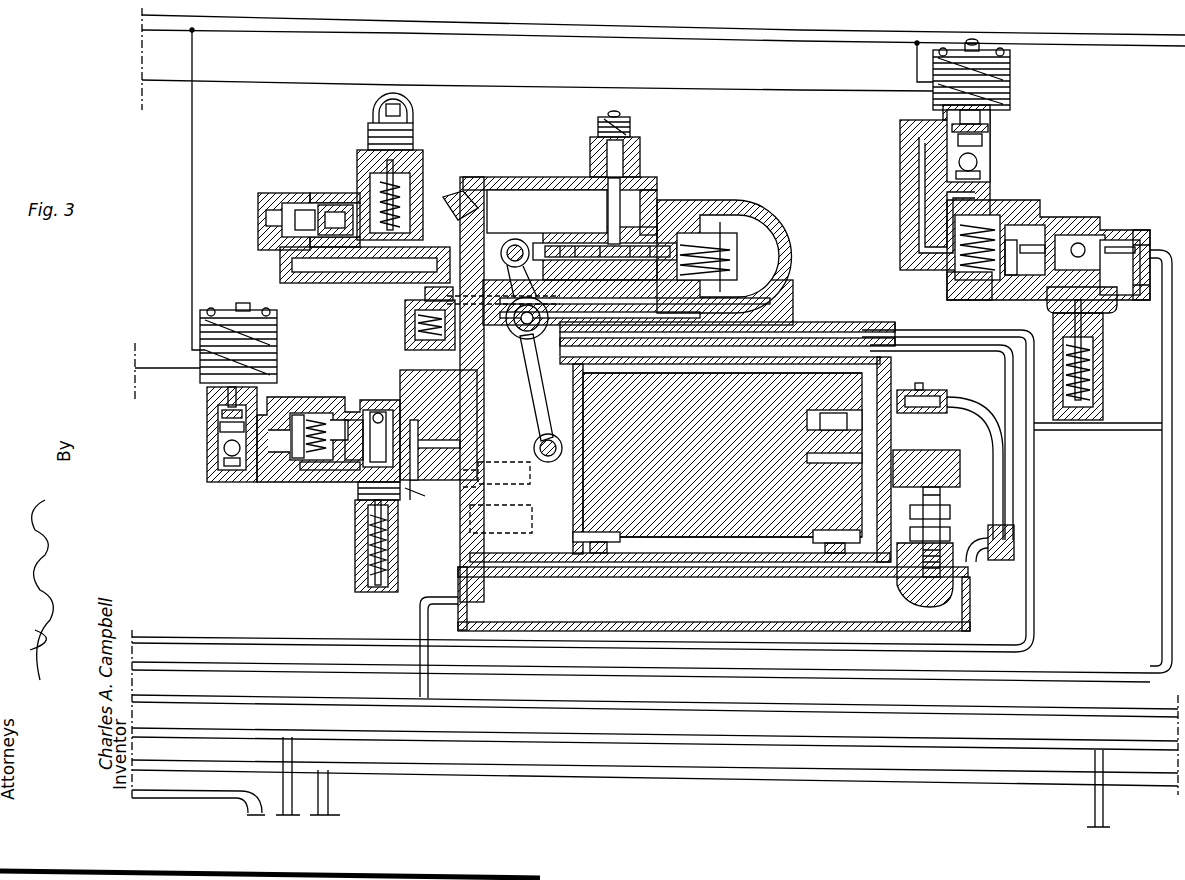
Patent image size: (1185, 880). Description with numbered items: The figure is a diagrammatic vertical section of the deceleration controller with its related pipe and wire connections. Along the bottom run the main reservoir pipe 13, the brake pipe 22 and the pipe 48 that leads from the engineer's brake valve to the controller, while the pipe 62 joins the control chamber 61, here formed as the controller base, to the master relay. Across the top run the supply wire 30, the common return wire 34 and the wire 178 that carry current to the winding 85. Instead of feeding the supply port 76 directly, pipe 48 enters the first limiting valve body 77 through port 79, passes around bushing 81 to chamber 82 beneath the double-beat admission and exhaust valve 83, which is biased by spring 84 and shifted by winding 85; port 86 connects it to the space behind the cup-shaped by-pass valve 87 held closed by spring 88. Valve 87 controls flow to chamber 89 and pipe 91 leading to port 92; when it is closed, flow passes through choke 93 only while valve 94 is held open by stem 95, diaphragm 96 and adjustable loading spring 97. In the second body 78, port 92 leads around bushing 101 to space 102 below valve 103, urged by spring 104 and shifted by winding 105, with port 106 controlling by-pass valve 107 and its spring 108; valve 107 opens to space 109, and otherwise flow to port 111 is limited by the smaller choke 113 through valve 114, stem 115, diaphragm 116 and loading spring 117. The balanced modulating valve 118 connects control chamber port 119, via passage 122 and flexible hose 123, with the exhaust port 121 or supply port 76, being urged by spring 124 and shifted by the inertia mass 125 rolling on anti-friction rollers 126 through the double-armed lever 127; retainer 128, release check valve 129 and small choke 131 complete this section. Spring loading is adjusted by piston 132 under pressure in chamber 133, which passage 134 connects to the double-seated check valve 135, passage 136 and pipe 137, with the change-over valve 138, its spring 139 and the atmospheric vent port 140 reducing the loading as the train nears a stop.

The main reservoir pipe 13 is at (192, 732).
The brake pipe 22 is at (192, 764).
The supply wire 30 is at (806, 37).
The common return wire 34 is at (676, 32).
The pipe 48 is at (176, 670).
The control chamber 61 is at (714, 599).
The pipe 62 is at (240, 692).
The supply port 76 is at (516, 267).
The first limiting valve mechanism 77 is at (1038, 205).
The second limiting valve mechanism 78 is at (280, 484).
The port 79 is at (1118, 245).
The bushing 81 is at (947, 282).
The chamber 82 is at (979, 163).
The double-beat admission and exhaust valve 83 is at (990, 128).
The spring 84 is at (985, 140).
The winding 85 is at (1000, 78).
The port 86 is at (912, 136).
The by-pass valve 87 is at (1013, 222).
The coil compression spring 88 is at (985, 215).
The chamber 89 is at (1050, 305).
The pipe 91 is at (911, 352).
The port 92 is at (852, 344).
The choke 93 is at (1050, 240).
The valve 94 is at (1082, 240).
The stem 95 is at (1152, 255).
The diaphragm 96 is at (1104, 328).
The adjustable loading spring 97 is at (1093, 362).
The bushing 101 is at (350, 398).
The space 102 is at (222, 455).
The double-beat admission and exhaust valve 103 is at (212, 418).
The coil compression spring 104 is at (215, 430).
The winding 105 is at (262, 345).
The port 106 is at (293, 412).
The by-pass valve 107 is at (318, 412).
The spring 108 is at (310, 395).
The space 109 is at (418, 494).
The port 111 is at (482, 443).
The choke 113 is at (405, 380).
The valve 114 is at (375, 405).
The stem 115 is at (320, 480).
The diaphragm 116 is at (352, 498).
The loading spring 117 is at (400, 535).
The modulating valve 118 is at (552, 242).
The control chamber port 119 is at (549, 340).
The exhaust port 121 is at (608, 210).
The passage 122 is at (786, 337).
The flexible hose 123 is at (968, 400).
The coiled compression spring 124 is at (780, 240).
The inertia mass 125 is at (740, 540).
The anti-friction rollers 126 is at (576, 510).
The double-armed lever 127 is at (534, 394).
The spring loaded retainer 128 is at (632, 130).
The spring loaded check valve 129 is at (405, 322).
The small choke 131 is at (440, 296).
The shifting piston 132 is at (748, 262).
The chamber 133 is at (776, 216).
The passage 134 is at (472, 178).
The double-seated check valve 135 is at (330, 203).
The passage 136 is at (285, 260).
The pipe 137 is at (908, 336).
The change-over valve 138 is at (455, 192).
The spring 139 is at (415, 160).
The atmospheric vent port 140 is at (365, 150).
The wire 178 is at (238, 76).